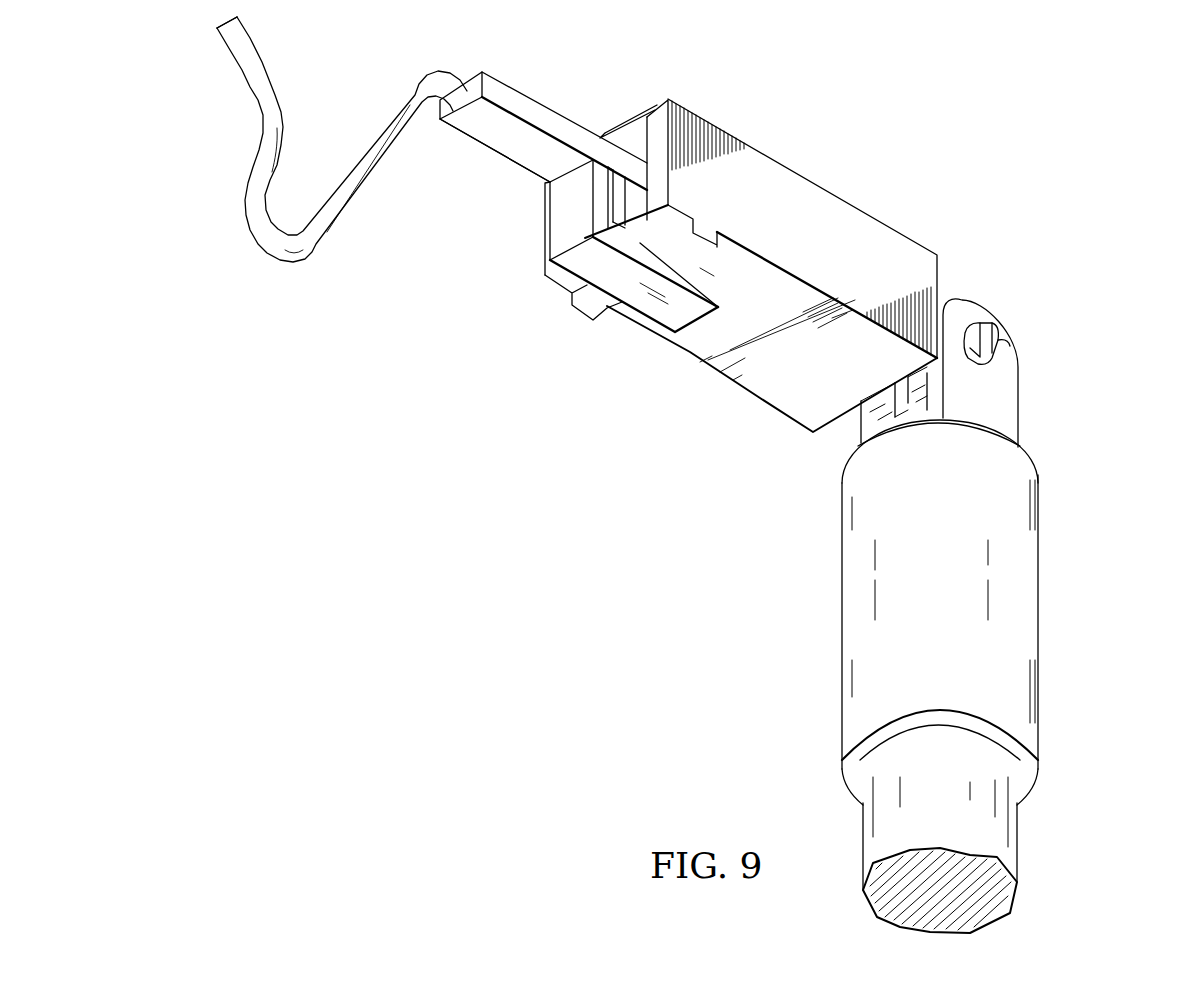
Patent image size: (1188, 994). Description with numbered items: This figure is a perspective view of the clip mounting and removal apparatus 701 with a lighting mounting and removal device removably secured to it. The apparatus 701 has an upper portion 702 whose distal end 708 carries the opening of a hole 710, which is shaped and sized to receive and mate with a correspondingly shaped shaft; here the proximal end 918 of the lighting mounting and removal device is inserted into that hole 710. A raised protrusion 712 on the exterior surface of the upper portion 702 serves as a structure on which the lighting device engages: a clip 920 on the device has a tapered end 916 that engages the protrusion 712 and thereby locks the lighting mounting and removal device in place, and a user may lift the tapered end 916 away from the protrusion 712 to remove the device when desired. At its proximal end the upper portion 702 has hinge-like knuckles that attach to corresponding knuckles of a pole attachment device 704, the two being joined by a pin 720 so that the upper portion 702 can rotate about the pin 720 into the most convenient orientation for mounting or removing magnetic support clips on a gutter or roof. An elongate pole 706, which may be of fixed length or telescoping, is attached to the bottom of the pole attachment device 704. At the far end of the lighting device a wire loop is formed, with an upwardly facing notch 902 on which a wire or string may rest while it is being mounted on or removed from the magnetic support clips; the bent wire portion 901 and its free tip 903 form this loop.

The clip mounting and removal apparatus 701 is at (1080, 496).
The upper portion 702 is at (826, 188).
The pole attachment device 704 is at (1040, 624).
The elongate pole 706 is at (1018, 840).
The distal end 708 is at (657, 113).
The hole 710 is at (628, 137).
The raised protrusion 712 is at (583, 316).
The pin 720 is at (1020, 367).
The bar arm 901 is at (490, 152).
The upwardly facing notch 902 is at (270, 247).
The hook tip 903 is at (212, 28).
The tapered end 916 is at (690, 272).
The proximal end 918 is at (545, 120).
The clip 920 is at (560, 220).